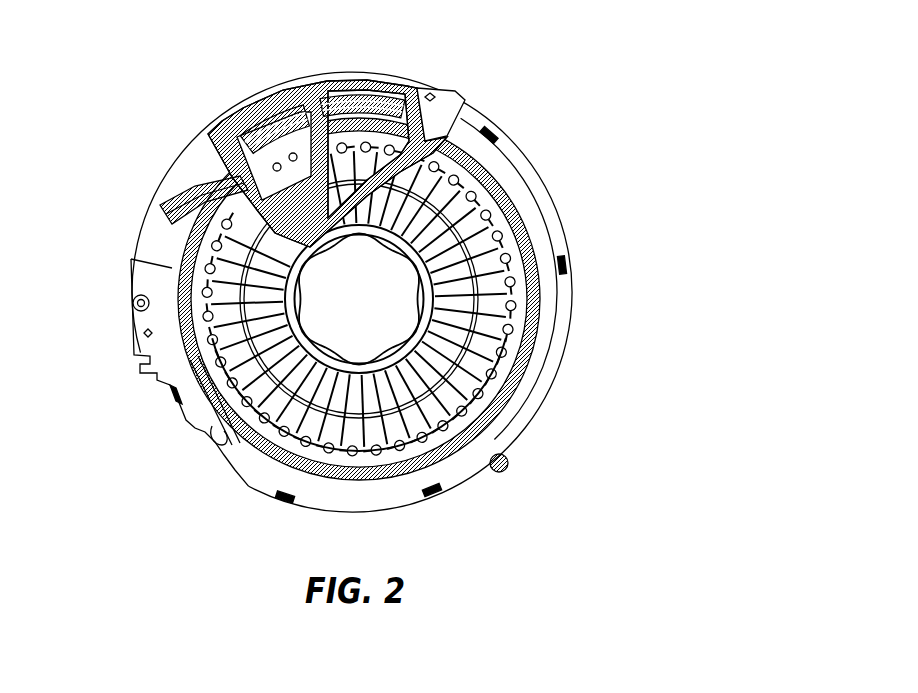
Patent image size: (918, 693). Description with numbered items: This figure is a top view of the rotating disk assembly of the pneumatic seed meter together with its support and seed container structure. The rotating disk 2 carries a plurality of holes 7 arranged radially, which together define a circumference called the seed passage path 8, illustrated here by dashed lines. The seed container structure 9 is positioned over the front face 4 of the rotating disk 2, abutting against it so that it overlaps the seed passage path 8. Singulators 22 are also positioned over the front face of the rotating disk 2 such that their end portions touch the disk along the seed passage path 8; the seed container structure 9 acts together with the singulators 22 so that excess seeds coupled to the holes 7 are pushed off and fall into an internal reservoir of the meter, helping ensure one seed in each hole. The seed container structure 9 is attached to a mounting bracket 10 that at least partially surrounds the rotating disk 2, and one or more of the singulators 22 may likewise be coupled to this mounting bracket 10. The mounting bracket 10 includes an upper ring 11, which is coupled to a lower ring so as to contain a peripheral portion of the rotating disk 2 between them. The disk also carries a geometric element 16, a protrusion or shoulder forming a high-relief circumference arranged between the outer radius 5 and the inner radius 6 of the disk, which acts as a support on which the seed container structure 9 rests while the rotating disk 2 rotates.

The rotating disk 2 is at (513, 243).
The front face 4 is at (160, 276).
The outer radius 5 is at (531, 363).
The inner radius 6 is at (213, 437).
The holes 7 is at (486, 169).
The seed passage path 8 is at (221, 367).
The seed container structure 9 is at (427, 153).
The mounting bracket 10 is at (245, 109).
The upper ring 11 is at (504, 427).
The geometric element 16 is at (484, 305).
The singulators 22 is at (258, 184).